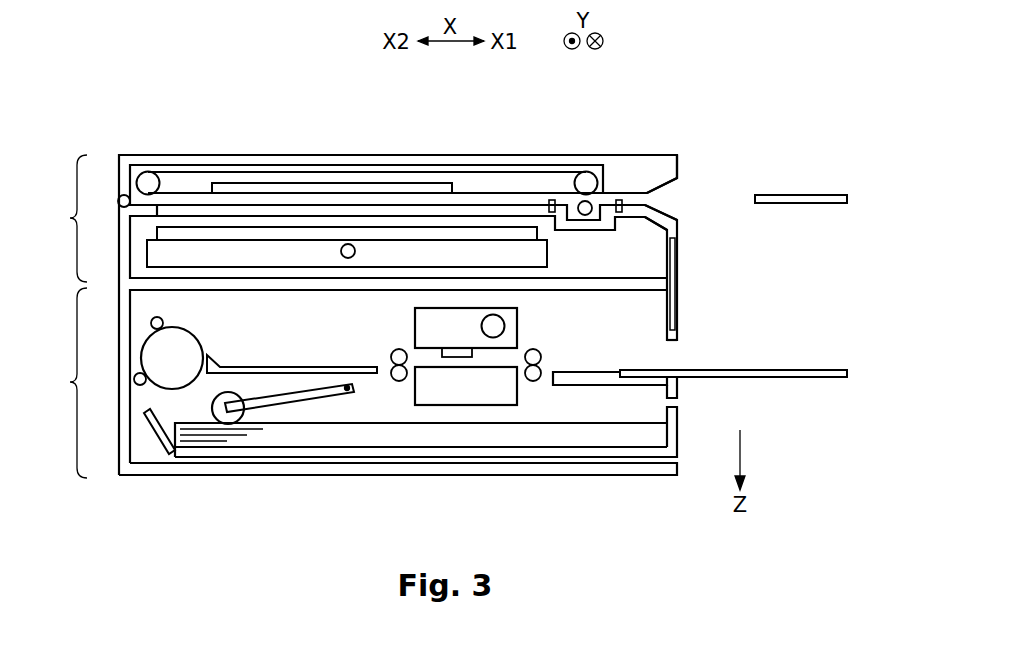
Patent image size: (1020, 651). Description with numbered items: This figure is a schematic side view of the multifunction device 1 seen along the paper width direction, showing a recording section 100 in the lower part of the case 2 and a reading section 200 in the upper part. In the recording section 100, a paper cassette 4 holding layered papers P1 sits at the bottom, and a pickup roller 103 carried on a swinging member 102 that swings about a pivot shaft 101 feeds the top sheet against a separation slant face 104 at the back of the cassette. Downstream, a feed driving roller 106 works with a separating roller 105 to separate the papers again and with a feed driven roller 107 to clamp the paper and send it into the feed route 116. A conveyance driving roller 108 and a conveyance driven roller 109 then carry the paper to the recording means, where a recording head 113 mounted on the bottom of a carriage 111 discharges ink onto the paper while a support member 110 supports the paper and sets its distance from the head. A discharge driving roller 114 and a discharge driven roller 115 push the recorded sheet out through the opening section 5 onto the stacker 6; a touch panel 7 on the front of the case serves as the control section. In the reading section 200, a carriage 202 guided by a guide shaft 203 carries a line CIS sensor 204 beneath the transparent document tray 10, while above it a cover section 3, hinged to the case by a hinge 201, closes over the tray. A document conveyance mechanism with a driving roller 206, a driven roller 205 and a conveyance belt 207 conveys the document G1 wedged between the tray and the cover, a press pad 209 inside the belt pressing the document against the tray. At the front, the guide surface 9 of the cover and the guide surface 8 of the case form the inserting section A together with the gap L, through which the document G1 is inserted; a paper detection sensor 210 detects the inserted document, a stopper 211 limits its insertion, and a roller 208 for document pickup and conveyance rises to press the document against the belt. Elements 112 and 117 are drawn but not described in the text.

The multifunction device 1 is at (686, 114).
The case 2 is at (122, 470).
The cover section 3 is at (465, 160).
The paper cassette 4 is at (640, 465).
The opening section 5 is at (677, 341).
The stacker 6 is at (802, 370).
The touch panel 7 is at (677, 284).
The guide surface 8 is at (681, 225).
The guide surface 9 is at (678, 185).
The document tray 10 is at (305, 212).
The recording section 100 is at (55, 383).
The reading section 200 is at (55, 218).
The pivot shaft 101 is at (347, 396).
The swinging member 102 is at (291, 397).
The pickup roller 103 is at (226, 426).
The separation slant face 104 is at (160, 452).
The separating roller 105 is at (145, 385).
The feed driving roller 106 is at (186, 352).
The feed driven roller 107 is at (164, 321).
The conveyance driving roller 108 is at (399, 382).
The conveyance driven roller 109 is at (397, 350).
The support member 110 is at (445, 406).
The carriage 111 is at (519, 340).
The guide shaft 112 is at (502, 326).
The recording head 113 is at (460, 358).
The discharge driving roller 114 is at (529, 380).
The discharge driven roller 115 is at (539, 364).
The feed route 116 is at (300, 367).
The discharge tray 117 is at (598, 372).
The hinge 201 is at (118, 200).
The carriage 202 is at (205, 244).
The guide shaft 203 is at (356, 251).
The line CIS sensor 204 is at (258, 232).
The driven roller 205 is at (149, 182).
The driving roller 206 is at (586, 182).
The conveyance belt 207 is at (415, 174).
The roller for document pickup and conveyance 208 is at (586, 216).
The press pad 209 is at (360, 186).
The paper detection sensor 210 is at (619, 198).
The stopper 211 is at (551, 198).
The document G1 is at (800, 195).
The paper P1 is at (592, 440).
The inserting section A is at (664, 205).
The gap L is at (632, 170).